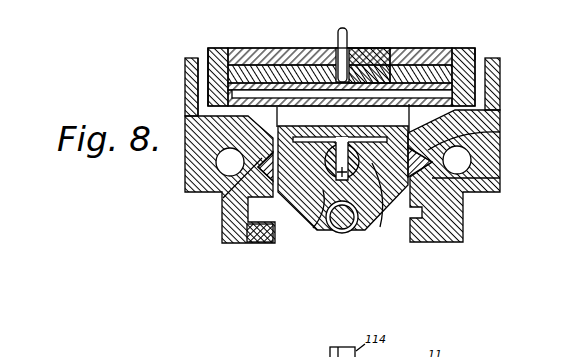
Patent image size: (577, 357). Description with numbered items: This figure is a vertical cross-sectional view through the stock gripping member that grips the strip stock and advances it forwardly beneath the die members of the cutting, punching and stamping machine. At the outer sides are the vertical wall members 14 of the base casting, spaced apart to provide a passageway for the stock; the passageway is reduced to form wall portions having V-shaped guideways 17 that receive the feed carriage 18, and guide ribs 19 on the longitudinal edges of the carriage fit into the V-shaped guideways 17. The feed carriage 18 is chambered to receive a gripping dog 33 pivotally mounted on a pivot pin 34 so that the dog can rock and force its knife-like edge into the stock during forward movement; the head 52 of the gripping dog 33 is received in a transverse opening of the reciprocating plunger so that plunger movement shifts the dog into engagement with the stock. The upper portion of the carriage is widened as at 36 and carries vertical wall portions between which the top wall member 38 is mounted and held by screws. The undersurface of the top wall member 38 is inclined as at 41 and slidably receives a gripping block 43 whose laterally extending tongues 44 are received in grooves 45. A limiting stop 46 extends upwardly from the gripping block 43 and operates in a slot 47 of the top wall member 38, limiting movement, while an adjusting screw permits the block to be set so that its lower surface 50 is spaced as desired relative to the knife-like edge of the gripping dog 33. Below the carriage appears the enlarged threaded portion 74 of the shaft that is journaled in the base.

The vertical wall members 14 is at (193, 75).
The V-shaped guideways 17 is at (517, 181).
The feed carriage 18 is at (378, 224).
The guide ribs 19 is at (202, 218).
The gripping dog 33 is at (365, 50).
The pivot pin 34 is at (393, 66).
The widened upper portion 36 is at (200, 121).
The top wall member 38 is at (424, 50).
The inclined undersurface 41 is at (277, 60).
The gripping block 43 is at (304, 74).
The laterally extending tongues 44 is at (475, 58).
The grooves 45 is at (203, 62).
The limiting stop 46 is at (343, 24).
The slot 47 is at (342, 30).
The lower surface 50 is at (372, 115).
The head 52 is at (307, 226).
The enlarged threaded portion 74 is at (342, 226).